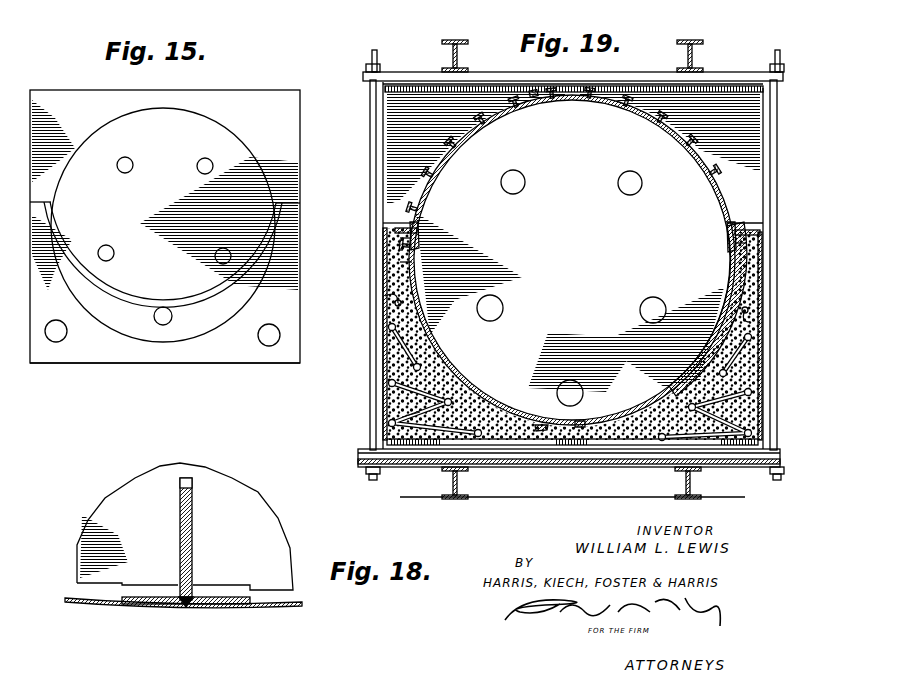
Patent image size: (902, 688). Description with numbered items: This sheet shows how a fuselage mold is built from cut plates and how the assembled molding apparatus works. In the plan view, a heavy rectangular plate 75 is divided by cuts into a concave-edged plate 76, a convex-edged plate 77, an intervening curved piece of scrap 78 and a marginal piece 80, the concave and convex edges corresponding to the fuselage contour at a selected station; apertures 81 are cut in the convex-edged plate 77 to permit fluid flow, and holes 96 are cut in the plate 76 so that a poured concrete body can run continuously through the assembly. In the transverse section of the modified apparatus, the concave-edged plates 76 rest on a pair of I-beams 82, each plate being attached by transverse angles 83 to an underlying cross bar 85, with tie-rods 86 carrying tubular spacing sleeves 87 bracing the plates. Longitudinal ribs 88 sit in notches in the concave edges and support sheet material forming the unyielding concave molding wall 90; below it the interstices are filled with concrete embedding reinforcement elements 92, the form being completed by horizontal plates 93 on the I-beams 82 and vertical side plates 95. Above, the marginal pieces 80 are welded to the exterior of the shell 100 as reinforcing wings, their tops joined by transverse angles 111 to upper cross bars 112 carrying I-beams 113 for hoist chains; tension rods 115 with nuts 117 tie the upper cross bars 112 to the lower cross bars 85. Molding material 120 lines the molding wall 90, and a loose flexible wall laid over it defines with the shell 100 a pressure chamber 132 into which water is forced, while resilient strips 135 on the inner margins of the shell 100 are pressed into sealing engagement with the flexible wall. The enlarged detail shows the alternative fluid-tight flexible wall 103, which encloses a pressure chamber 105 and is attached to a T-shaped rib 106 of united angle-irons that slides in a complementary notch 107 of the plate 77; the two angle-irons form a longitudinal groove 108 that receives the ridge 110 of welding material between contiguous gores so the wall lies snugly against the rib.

In FIG. 15, the heavy rectangular plate 75 is at (305, 218).
In FIG. 15, the concave-edged plate 76 is at (123, 352).
In FIG. 15, the convex-edged plate 77 is at (190, 123).
In FIG. 19, the convex-edged plate 77 is at (446, 185).
In FIG. 15, the curved piece of scrap 78 is at (218, 325).
In FIG. 15, the marginal piece 80 is at (60, 100).
In FIG. 19, the marginal piece 80 is at (735, 153).
In FIG. 15, the apertures 81 is at (197, 167).
In FIG. 19, the apertures 81 is at (618, 183).
In FIG. 19, the I-beams 82 is at (450, 482).
In FIG. 19, the transverse angles 83 is at (384, 443).
In FIG. 19, the cross bar 85 is at (417, 455).
In FIG. 19, the tie-rods 86 is at (395, 305).
In FIG. 19, the tubular spacing sleeves 87 is at (385, 296).
In FIG. 19, the longitudinals or ribs 88 is at (580, 428).
In FIG. 19, the concave molding wall 90 is at (536, 432).
In FIG. 19, the reinforcement elements 92 is at (402, 349).
In FIG. 19, the horizontal plates 93 is at (486, 468).
In FIG. 19, the vertical side plates 95 is at (383, 246).
In FIG. 15, the holes 96 is at (57, 342).
In FIG. 19, the holes 96 is at (410, 408).
In FIG. 19, the shell 100 is at (530, 102).
In FIG. 18, the flexible wall 103 is at (100, 604).
In FIG. 18, the pressure chamber 105 is at (270, 541).
In FIG. 18, the T-shaped longitudinals or ribs 106 is at (180, 527).
In FIG. 19, the T-shaped longitudinals or ribs 106 is at (660, 382).
In FIG. 18, the T-shaped notches 107 is at (193, 481).
In FIG. 19, the T-shaped notches 107 is at (503, 399).
In FIG. 18, the longitudinal groove 108 is at (194, 594).
In FIG. 18, the ridge of welding material 110 is at (183, 606).
In FIG. 19, the transverse angles 111 is at (402, 90).
In FIG. 19, the upper cross bars 112 is at (605, 78).
In FIG. 19, the I-beams 113 is at (455, 40).
In FIG. 19, the tension rods 115 is at (370, 380).
In FIG. 19, the nuts 117 is at (368, 63).
In FIG. 19, the molding material 120 is at (725, 281).
In FIG. 19, the pressure chamber 132 is at (575, 242).
In FIG. 19, the strips 135 is at (421, 232).